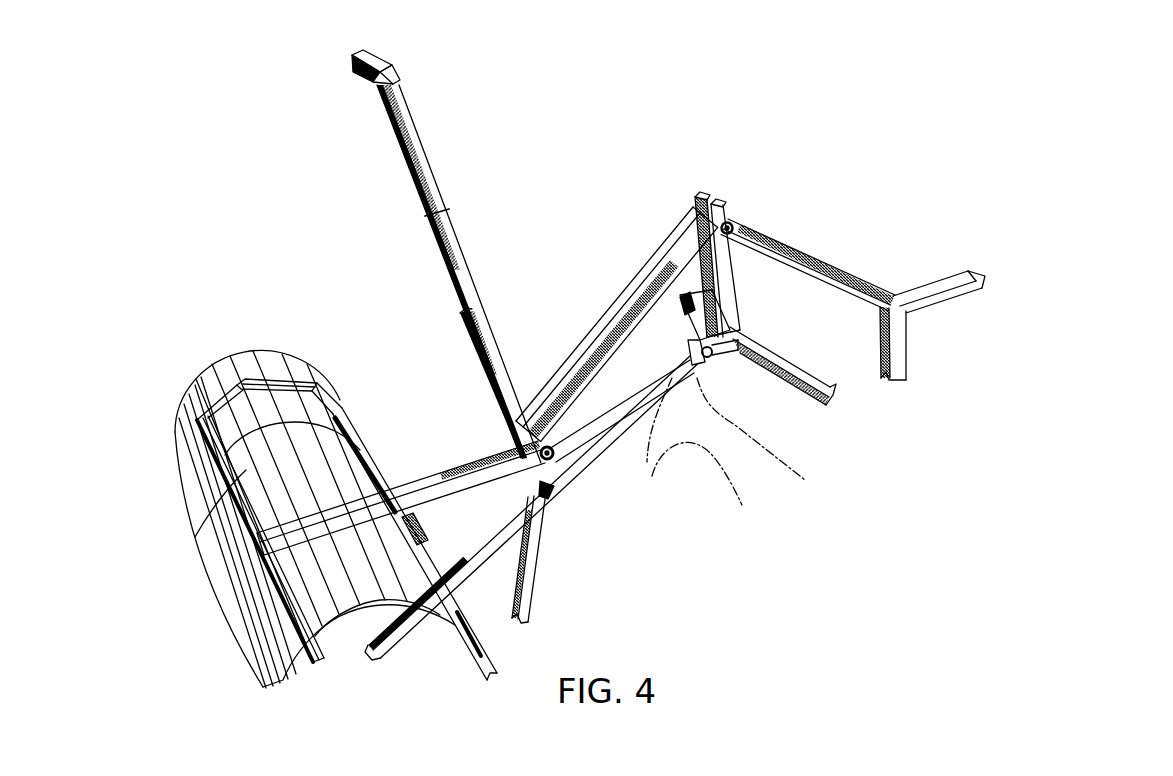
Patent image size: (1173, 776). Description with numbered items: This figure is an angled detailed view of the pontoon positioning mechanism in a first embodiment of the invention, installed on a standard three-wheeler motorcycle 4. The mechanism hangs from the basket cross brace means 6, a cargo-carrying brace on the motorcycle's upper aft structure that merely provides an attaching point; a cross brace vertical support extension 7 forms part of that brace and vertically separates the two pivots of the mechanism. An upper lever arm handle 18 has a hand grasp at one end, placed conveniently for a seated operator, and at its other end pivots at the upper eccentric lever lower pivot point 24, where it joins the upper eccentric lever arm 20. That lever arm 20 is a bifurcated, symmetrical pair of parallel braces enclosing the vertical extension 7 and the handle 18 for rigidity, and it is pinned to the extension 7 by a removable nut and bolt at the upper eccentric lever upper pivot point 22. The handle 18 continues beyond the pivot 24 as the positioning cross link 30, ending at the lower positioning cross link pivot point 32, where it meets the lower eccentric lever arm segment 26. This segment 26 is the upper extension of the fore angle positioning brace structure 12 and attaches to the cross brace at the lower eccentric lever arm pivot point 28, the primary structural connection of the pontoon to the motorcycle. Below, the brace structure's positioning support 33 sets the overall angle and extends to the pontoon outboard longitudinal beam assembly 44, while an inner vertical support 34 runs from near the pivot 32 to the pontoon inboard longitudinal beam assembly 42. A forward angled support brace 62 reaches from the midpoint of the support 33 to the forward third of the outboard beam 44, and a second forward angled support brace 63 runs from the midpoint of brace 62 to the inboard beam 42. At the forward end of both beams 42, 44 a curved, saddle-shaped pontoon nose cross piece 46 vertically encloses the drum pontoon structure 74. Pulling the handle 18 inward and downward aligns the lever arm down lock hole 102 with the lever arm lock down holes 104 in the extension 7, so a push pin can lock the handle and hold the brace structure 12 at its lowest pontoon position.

The three-wheeler motorcycle 4 is at (713, 455).
The basket cross brace means 6 is at (823, 272).
The cross brace vertical support extension 7 is at (731, 301).
The fore angle positioning brace structure 12 is at (660, 190).
The upper lever arm handle 18 is at (397, 149).
The upper eccentric lever arm 20 is at (650, 302).
The upper eccentric lever upper pivot point 22 is at (735, 219).
The upper eccentric lever lower pivot point 24 is at (559, 452).
The lower eccentric lever arm segment 26 is at (627, 418).
The lower eccentric lever arm pivot point 28 is at (712, 362).
The positioning cross link 30 is at (462, 326).
The lower positioning cross link pivot point 32 is at (553, 494).
The positioning support 33 is at (487, 545).
The inner vertical support 34 is at (532, 598).
The pontoon inboard longitudinal beam assembly 42 is at (372, 456).
The pontoon outboard longitudinal beam assembly 44 is at (236, 532).
The pontoon nose cross piece 46 is at (268, 377).
The forward angled support brace 62 is at (418, 483).
The second forward angled support brace 63 is at (428, 522).
The drum pontoon structure 74 is at (214, 390).
The lever arm down lock hole 102 is at (454, 210).
The lever arm lock down holes 104 is at (705, 190).